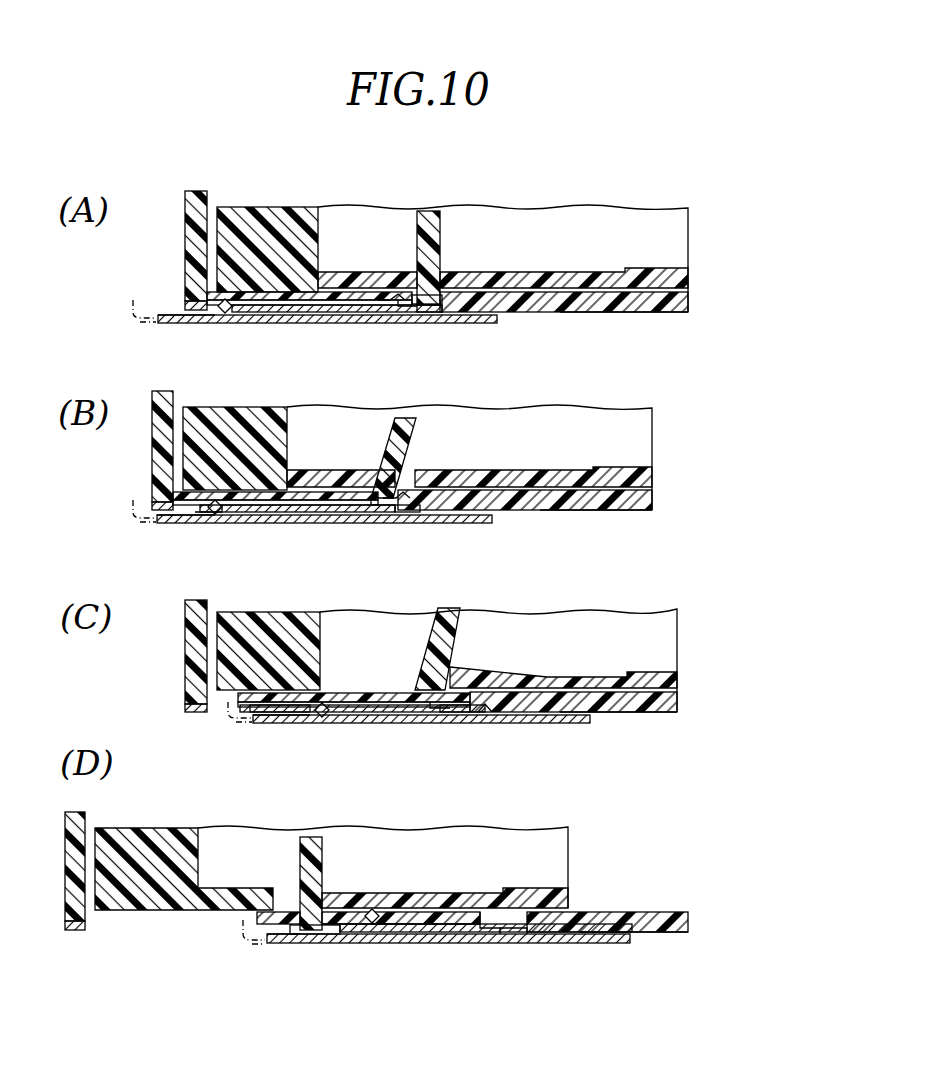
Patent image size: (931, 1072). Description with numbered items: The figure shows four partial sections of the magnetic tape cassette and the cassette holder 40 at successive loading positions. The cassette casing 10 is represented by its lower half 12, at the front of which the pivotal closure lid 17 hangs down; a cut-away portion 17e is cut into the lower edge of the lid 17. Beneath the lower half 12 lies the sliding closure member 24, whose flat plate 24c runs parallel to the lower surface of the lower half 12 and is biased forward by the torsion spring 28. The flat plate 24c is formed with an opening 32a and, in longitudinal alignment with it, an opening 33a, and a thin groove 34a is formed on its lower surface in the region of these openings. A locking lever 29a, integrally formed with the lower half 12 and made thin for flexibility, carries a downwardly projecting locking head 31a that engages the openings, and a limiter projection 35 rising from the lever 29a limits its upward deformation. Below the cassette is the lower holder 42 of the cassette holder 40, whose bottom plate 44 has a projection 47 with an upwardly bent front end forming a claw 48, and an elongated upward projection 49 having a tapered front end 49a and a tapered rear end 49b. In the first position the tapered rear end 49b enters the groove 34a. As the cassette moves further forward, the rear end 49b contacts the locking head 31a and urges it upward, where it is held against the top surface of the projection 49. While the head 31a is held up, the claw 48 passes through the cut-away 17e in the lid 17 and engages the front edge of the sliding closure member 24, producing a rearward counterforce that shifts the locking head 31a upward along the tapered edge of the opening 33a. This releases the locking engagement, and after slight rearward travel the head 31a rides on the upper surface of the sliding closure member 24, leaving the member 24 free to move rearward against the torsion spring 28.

The cassette casing 10 is at (580, 214).
The lower half 12 is at (672, 276).
The pivotal closure lid 17 is at (190, 246).
The cut-away portion 17e is at (195, 311).
The sliding closure member 24 is at (570, 306).
The flat plate 24c is at (630, 306).
The torsion spring 28 is at (282, 836).
The locking lever 29a is at (468, 283).
The locking head 31a is at (425, 312).
The opening 32a is at (262, 304).
The opening 33a is at (400, 307).
The thin groove 34a is at (438, 305).
The limiter projection 35 is at (438, 235).
The cassette holder 40 is at (480, 324).
The lower holder 42 is at (167, 324).
The bottom plate 44 is at (445, 313).
The projection 47 is at (143, 325).
The claw 48 is at (133, 302).
The elongated upward projection 49 is at (305, 301).
The tapered front end 49a is at (225, 312).
The tapered rear end 49b is at (381, 302).